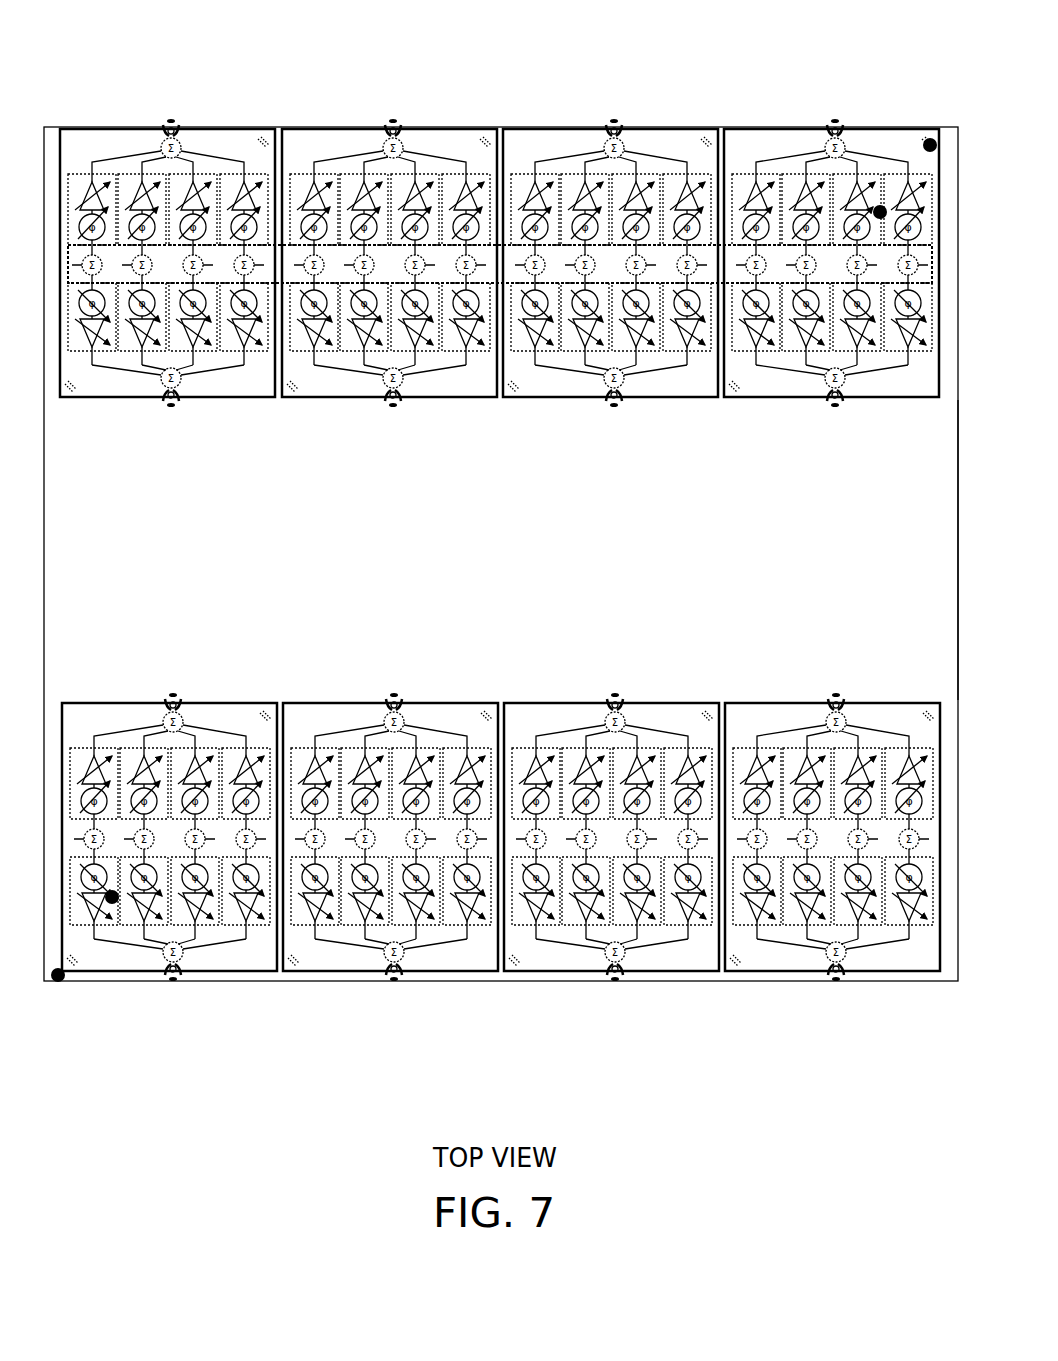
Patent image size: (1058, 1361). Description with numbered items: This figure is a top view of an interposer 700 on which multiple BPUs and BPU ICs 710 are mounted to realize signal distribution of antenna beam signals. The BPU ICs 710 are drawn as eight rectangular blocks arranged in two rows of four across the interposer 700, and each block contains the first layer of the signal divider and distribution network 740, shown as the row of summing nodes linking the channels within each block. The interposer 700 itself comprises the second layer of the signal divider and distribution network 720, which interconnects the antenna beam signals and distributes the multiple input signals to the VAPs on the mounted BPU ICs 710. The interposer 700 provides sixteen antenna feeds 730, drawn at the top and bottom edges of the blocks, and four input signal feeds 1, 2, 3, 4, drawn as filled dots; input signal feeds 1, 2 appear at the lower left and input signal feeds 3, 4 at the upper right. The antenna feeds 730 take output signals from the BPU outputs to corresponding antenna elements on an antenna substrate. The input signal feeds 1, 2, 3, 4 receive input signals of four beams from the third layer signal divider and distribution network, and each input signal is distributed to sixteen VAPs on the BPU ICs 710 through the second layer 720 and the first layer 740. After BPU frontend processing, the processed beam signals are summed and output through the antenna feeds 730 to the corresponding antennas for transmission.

The interposer 700 is at (90, 127).
The BPU ICs 710 is at (254, 400).
The second layer of signal divider and distribution network 720 is at (939, 539).
The antenna feed 730 is at (159, 403).
The first layer of signal divider and distribution network 740 is at (425, 274).
The input signal feed 1 is at (66, 983).
The input signal feed 2 is at (120, 903).
The input signal feed 3 is at (872, 208).
The input signal feed 4 is at (923, 141).